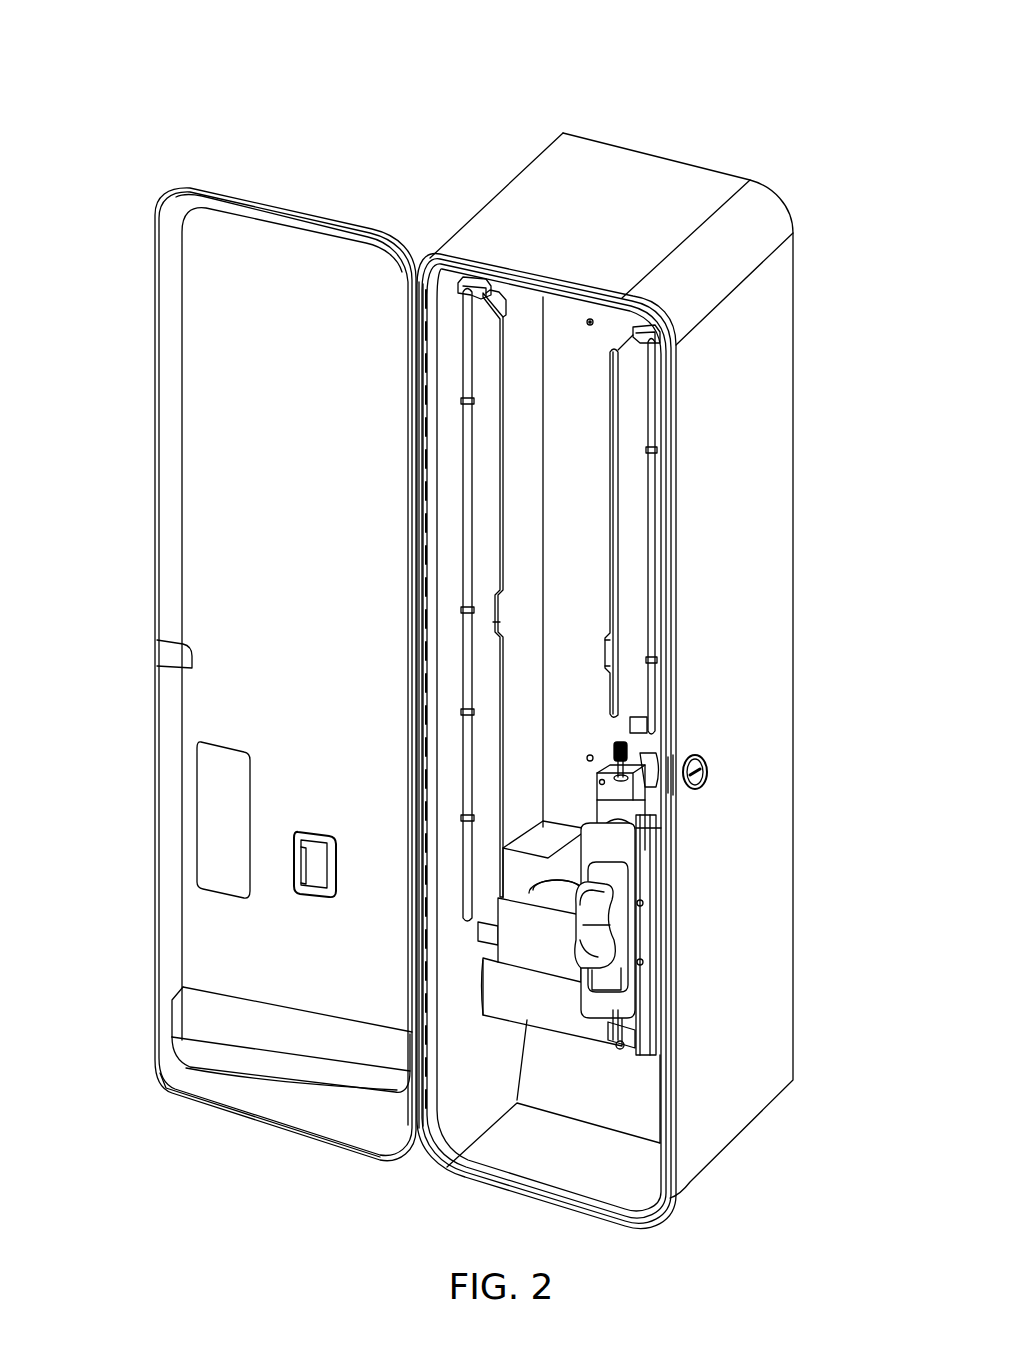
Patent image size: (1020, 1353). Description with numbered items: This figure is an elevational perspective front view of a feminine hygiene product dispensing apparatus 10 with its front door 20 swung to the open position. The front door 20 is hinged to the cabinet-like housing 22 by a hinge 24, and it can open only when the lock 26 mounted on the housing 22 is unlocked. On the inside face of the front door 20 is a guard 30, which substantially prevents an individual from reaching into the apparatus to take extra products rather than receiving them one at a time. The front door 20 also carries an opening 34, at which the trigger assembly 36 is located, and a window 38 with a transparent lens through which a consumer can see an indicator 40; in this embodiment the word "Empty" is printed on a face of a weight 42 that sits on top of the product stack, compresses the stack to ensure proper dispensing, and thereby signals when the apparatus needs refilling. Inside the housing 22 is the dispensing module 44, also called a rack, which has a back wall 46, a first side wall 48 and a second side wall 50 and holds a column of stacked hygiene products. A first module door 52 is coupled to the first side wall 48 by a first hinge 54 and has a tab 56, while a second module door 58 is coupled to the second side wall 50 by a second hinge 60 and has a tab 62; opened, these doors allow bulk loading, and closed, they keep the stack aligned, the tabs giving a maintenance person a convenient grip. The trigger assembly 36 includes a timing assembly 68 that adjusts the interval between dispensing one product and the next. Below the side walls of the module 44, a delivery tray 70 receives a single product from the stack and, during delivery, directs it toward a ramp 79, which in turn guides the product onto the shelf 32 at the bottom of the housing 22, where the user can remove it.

The feminine hygiene product dispensing apparatus 10 is at (784, 72).
The front door 20 is at (262, 228).
The housing 22 is at (778, 366).
The hinge 24 is at (411, 335).
The lock 26 is at (714, 769).
The guard 30 is at (197, 1033).
The shelf 32 is at (497, 1155).
The opening 34 is at (212, 828).
The trigger assembly 36 is at (664, 920).
The window 38 is at (318, 846).
The indicator 40 is at (506, 937).
The weight 42 is at (530, 1012).
The dispensing module 44 is at (566, 342).
The back wall 46 is at (605, 318).
The first side wall 48 is at (518, 408).
The second side wall 50 is at (628, 320).
The first module door 52 is at (489, 485).
The first hinge 54 is at (466, 675).
The tab 56 is at (500, 605).
The second module door 58 is at (632, 400).
The second hinge 60 is at (655, 568).
The tab 62 is at (613, 643).
The timing assembly 68 is at (648, 752).
The delivery tray 70 is at (548, 1028).
The ramp 79 is at (647, 1078).